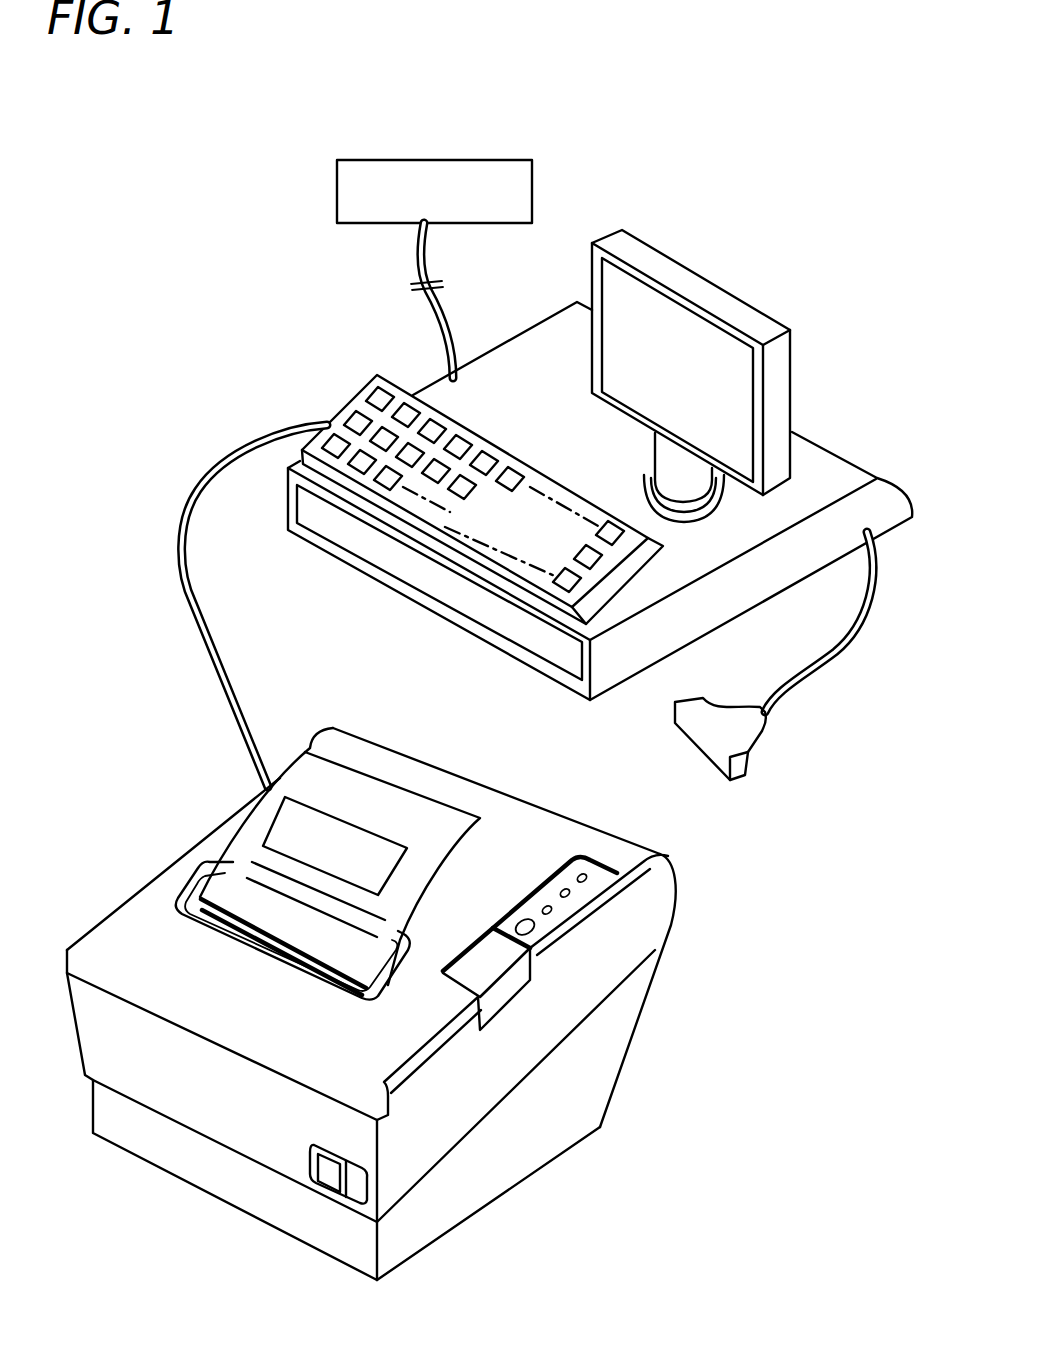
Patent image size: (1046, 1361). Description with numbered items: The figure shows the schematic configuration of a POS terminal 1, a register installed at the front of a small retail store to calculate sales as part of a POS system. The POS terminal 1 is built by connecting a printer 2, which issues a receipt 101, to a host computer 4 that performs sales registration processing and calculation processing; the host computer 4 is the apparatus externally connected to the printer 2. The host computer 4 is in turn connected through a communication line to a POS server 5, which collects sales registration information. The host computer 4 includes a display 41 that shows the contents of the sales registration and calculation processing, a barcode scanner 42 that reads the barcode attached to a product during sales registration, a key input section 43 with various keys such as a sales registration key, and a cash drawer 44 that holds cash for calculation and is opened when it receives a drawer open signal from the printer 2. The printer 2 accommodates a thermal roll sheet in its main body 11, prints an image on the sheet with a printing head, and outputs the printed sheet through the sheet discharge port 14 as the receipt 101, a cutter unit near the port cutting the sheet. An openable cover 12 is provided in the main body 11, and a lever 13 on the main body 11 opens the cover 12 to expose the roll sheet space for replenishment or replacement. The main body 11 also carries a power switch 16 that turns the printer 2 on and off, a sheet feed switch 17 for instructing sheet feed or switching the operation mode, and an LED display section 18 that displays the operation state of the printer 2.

The POS terminal 1 is at (752, 222).
The printer 2 is at (677, 876).
The host computer 4 is at (600, 505).
The POS server 5 is at (533, 190).
The main body 11 is at (402, 1087).
The cover 12 is at (528, 823).
The lever 13 is at (573, 1004).
The sheet discharge port 14 is at (220, 867).
The power switch 16 is at (325, 1175).
The sheet feed switch 17 is at (530, 927).
The LED display section 18 is at (597, 860).
The display 41 is at (773, 312).
The barcode scanner 42 is at (765, 734).
The key input section 43 is at (450, 525).
The cash drawer 44 is at (470, 605).
The receipt 101 is at (435, 813).